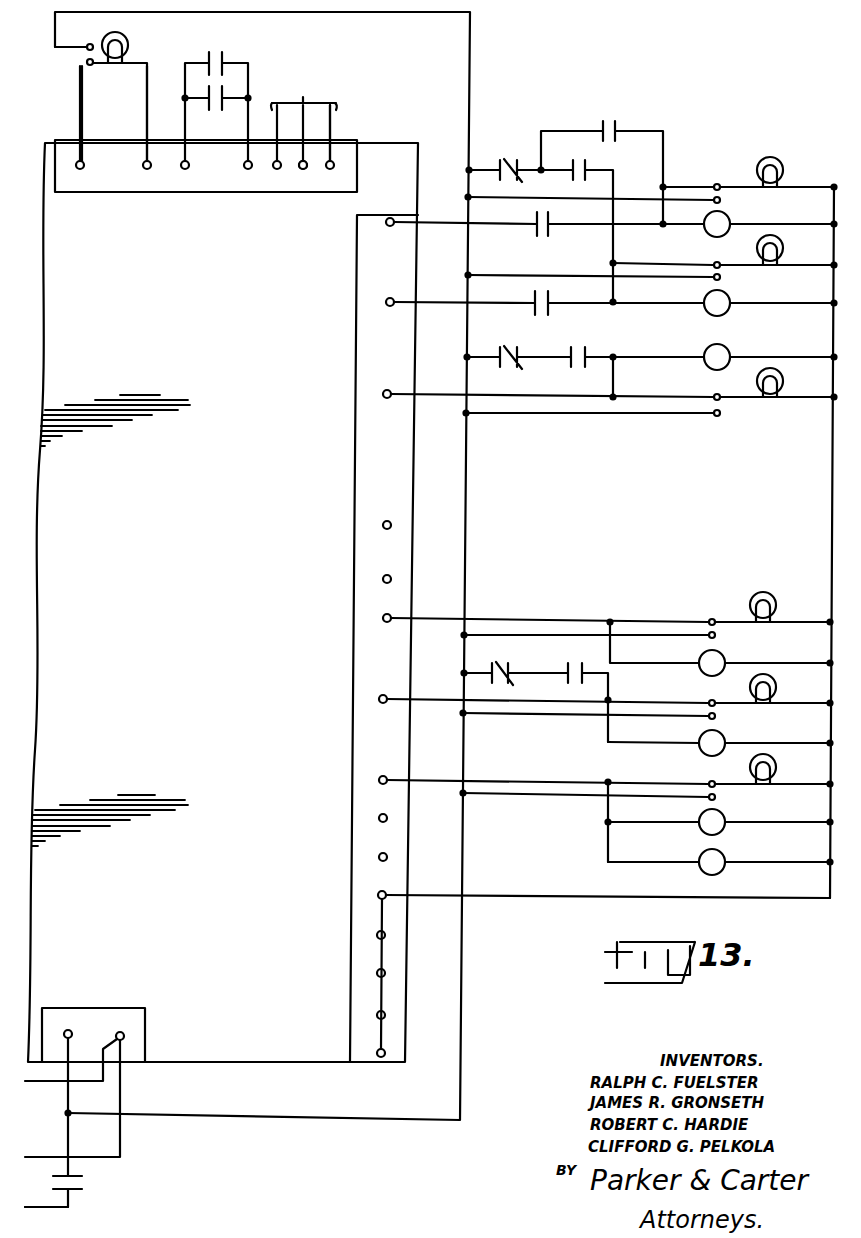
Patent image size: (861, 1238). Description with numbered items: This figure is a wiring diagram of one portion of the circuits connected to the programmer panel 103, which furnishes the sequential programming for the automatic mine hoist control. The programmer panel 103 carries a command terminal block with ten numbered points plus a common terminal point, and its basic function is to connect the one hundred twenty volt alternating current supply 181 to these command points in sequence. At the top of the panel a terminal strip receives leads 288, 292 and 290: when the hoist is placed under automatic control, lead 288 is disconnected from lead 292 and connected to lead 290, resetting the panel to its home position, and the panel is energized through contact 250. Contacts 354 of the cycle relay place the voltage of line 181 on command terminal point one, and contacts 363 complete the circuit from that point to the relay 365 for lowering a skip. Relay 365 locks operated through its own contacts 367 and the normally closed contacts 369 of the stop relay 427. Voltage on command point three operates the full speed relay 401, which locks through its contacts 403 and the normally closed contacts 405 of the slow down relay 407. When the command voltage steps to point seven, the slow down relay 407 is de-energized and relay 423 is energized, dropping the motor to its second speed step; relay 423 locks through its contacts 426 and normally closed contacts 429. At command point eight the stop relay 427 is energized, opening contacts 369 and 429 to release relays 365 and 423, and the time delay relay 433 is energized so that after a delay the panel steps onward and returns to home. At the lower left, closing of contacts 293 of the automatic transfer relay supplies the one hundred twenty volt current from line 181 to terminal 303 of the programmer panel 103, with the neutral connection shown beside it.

The programmer panel 103 is at (223, 564).
The contacts of relay 351 354 is at (208, 110).
The lead 292 is at (272, 106).
The contact 250 is at (328, 92).
The lead 290 is at (333, 127).
The lead 288 is at (298, 160).
The normally closed contacts of stop relay 427 369 is at (528, 132).
The contacts of relay 365 367 is at (614, 123).
The contacts of relay 351 363 is at (548, 231).
The relay 365 is at (729, 221).
The normally closed contacts of slow down relay 407 405 is at (509, 370).
The contacts of relay 401 403 is at (586, 348).
The full speed relay 401 is at (728, 348).
The normally closed contacts of relay 427 429 is at (510, 650).
The contacts of relay 423 426 is at (584, 650).
The slow down relay 407 is at (704, 676).
The relay 423 is at (703, 755).
The stop relay 427 is at (720, 834).
The time delay relay 433 is at (712, 875).
The terminal of programmer panel 303 is at (70, 1030).
The contacts of relay 253 293 is at (80, 1182).
The 120 volt alternating current electrical supply line 181 is at (50, 1210).